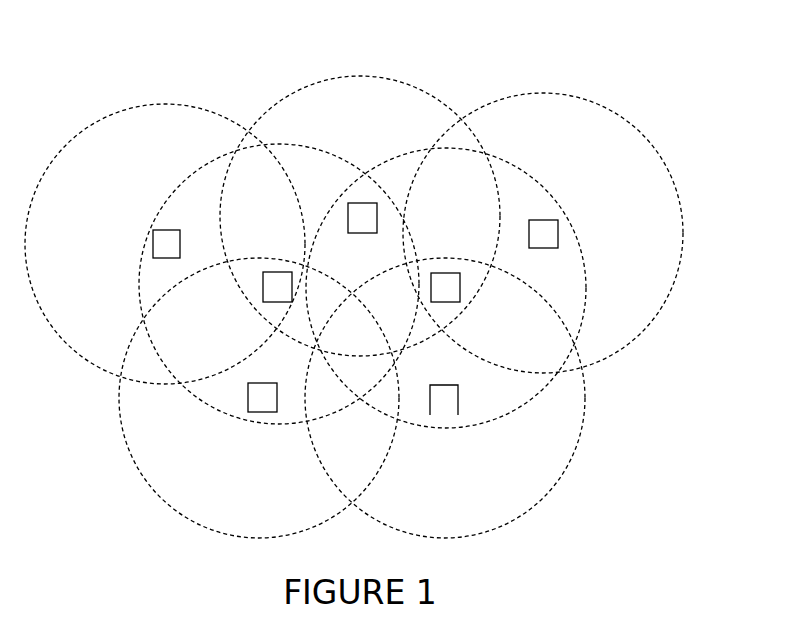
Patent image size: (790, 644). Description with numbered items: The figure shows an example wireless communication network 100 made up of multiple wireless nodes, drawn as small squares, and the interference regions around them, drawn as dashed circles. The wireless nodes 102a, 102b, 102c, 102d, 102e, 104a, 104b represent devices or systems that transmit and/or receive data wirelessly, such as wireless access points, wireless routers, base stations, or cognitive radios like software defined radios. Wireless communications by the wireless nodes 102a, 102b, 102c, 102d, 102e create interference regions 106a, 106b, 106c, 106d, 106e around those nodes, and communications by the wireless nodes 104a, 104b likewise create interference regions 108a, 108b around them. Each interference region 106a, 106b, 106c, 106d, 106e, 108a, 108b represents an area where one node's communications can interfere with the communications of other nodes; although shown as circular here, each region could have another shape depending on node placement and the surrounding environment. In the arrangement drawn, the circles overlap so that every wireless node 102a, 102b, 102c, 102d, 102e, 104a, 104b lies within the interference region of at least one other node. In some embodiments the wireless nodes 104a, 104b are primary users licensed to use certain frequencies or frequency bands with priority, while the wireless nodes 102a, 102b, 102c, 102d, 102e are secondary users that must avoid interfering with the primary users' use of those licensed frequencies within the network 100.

The wireless communication network 100 is at (569, 548).
The wireless node 102a is at (165, 260).
The wireless node 102b is at (262, 415).
The wireless node 102c is at (362, 203).
The wireless node 102d is at (442, 273).
The wireless node 102e is at (443, 415).
The wireless node 104a is at (277, 302).
The wireless node 104b is at (543, 218).
The interference region 106a is at (147, 102).
The interference region 106b is at (170, 503).
The interference region 106c is at (305, 89).
The interference region 106d is at (588, 295).
The interference region 106e is at (565, 478).
The interference region 108a is at (185, 182).
The interference region 108b is at (553, 92).